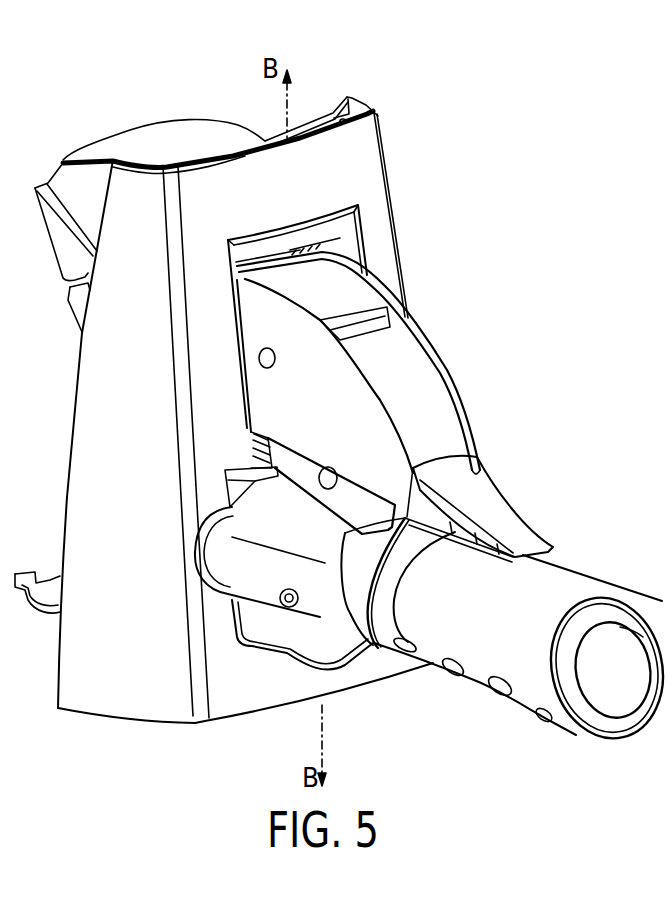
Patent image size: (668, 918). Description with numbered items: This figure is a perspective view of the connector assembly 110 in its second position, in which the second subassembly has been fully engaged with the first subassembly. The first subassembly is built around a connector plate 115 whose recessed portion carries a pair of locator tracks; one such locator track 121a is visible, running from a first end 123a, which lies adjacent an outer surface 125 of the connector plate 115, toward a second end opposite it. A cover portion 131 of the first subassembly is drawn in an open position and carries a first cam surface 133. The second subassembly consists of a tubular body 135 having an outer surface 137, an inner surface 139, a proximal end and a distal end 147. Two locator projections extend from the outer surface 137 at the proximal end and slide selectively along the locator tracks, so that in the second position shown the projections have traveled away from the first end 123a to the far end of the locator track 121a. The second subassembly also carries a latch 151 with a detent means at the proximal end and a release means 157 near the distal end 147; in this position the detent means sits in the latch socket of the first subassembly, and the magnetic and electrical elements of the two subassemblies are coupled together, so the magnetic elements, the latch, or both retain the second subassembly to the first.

The connector assembly 110 is at (388, 85).
The connector plate 115 is at (197, 300).
The cover portion 131 is at (177, 134).
The outer surface 125 is at (245, 700).
The first cam surface 133 is at (307, 237).
The latch 151 is at (424, 391).
The locator track 121a is at (221, 596).
The first end 123a is at (226, 606).
The outer surface 137 is at (388, 610).
The release means 157 is at (487, 507).
The tubular body 135 is at (431, 610).
The distal end 147 is at (591, 740).
The inner surface 139 is at (616, 693).